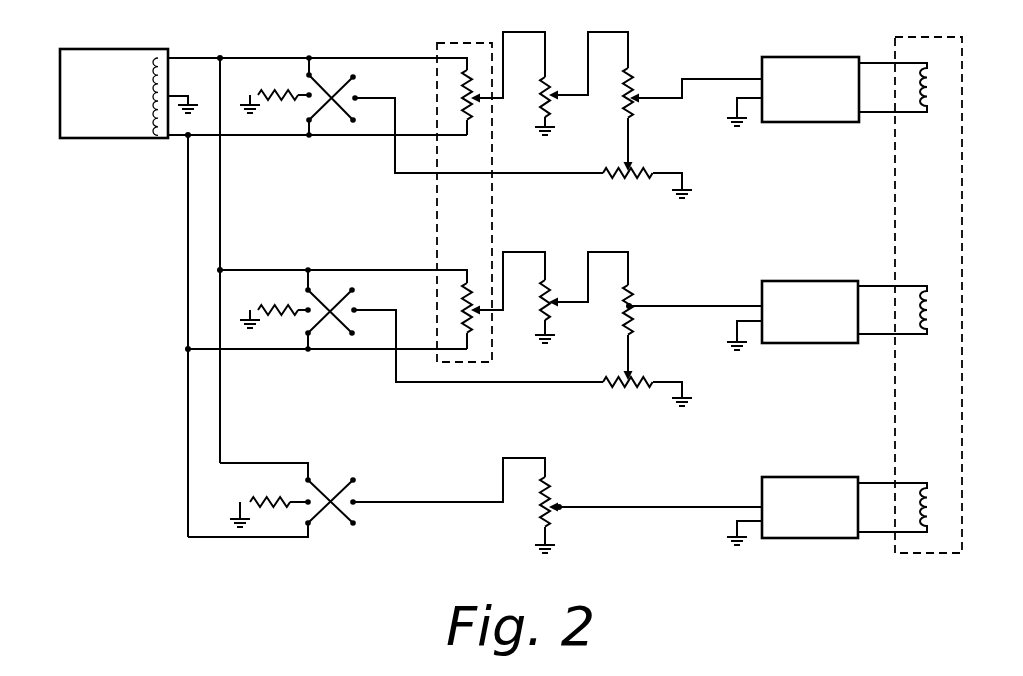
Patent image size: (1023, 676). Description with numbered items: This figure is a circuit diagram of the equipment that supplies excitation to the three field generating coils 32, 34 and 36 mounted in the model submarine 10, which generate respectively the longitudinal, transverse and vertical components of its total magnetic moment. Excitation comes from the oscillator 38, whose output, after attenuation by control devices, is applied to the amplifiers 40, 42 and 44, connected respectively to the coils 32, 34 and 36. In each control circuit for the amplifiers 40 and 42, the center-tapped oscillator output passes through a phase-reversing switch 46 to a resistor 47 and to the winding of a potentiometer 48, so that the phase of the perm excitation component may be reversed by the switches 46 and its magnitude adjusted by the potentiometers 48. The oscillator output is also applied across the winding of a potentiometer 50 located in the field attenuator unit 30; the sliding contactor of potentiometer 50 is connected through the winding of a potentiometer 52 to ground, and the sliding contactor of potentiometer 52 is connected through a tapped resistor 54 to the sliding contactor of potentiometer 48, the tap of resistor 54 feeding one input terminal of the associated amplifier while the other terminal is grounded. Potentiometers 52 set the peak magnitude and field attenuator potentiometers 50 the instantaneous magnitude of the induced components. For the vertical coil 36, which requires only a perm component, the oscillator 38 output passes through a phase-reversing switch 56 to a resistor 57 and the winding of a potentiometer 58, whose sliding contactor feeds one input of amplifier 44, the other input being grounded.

The model submarine 10 is at (933, 295).
The field attenuator unit 30 is at (468, 26).
The field generating coil 32 is at (933, 96).
The field generating coil 34 is at (932, 287).
The field generating coil 36 is at (932, 489).
The oscillator 38 is at (90, 48).
The amplifier 40 is at (806, 57).
The amplifier 42 is at (789, 281).
The amplifier 44 is at (790, 477).
The phase-reversing switch 46 is at (360, 85).
The resistor 47 is at (278, 88).
The potentiometer 48 is at (640, 182).
The potentiometer 50 is at (461, 92).
The potentiometer 52 is at (540, 100).
The tapped resistor 54 is at (632, 88).
The phase-reversing switch 56 is at (327, 484).
The resistor 57 is at (271, 496).
The potentiometer 58 is at (540, 500).